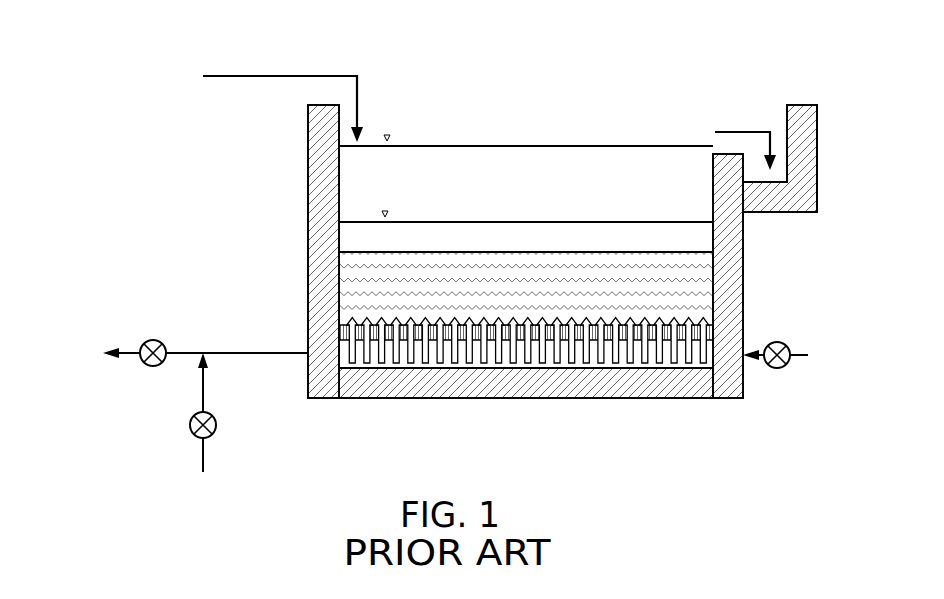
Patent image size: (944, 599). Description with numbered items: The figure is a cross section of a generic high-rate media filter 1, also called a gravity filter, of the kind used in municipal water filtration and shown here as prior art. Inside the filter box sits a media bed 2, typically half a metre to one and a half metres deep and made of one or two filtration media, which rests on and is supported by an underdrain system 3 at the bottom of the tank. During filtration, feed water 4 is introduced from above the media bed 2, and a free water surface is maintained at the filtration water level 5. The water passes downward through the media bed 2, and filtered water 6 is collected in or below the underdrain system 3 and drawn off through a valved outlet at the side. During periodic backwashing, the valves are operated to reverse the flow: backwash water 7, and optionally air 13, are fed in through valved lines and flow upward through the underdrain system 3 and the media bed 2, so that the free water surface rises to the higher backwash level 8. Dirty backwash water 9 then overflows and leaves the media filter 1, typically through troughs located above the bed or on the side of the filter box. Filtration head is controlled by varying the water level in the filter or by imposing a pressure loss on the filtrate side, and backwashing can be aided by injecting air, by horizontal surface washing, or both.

The media filter 1 is at (220, 206).
The media bed 2 is at (410, 265).
The underdrain system 3 is at (690, 310).
The feed water 4 is at (280, 75).
The filtration water level 5 is at (526, 222).
The filtered water 6 is at (130, 352).
The backwash water 7 is at (203, 388).
The backwash level 8 is at (625, 145).
The dirty backwash water 9 is at (750, 130).
The air 13 is at (805, 350).